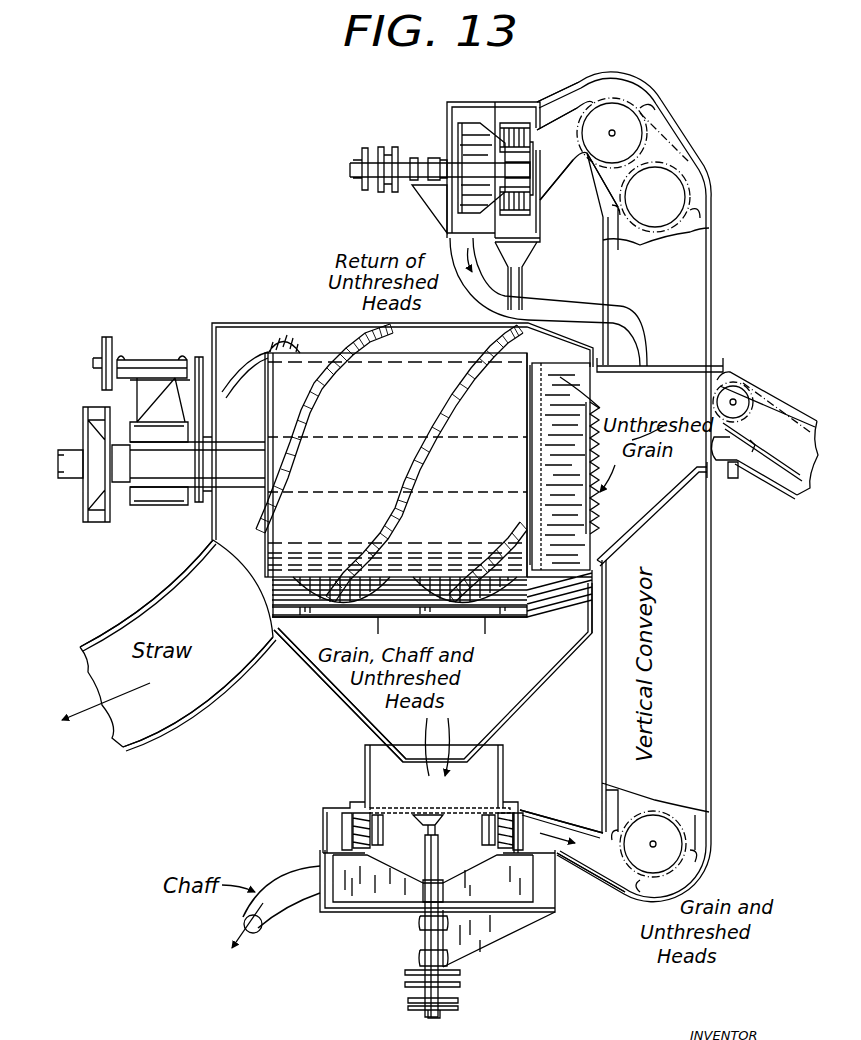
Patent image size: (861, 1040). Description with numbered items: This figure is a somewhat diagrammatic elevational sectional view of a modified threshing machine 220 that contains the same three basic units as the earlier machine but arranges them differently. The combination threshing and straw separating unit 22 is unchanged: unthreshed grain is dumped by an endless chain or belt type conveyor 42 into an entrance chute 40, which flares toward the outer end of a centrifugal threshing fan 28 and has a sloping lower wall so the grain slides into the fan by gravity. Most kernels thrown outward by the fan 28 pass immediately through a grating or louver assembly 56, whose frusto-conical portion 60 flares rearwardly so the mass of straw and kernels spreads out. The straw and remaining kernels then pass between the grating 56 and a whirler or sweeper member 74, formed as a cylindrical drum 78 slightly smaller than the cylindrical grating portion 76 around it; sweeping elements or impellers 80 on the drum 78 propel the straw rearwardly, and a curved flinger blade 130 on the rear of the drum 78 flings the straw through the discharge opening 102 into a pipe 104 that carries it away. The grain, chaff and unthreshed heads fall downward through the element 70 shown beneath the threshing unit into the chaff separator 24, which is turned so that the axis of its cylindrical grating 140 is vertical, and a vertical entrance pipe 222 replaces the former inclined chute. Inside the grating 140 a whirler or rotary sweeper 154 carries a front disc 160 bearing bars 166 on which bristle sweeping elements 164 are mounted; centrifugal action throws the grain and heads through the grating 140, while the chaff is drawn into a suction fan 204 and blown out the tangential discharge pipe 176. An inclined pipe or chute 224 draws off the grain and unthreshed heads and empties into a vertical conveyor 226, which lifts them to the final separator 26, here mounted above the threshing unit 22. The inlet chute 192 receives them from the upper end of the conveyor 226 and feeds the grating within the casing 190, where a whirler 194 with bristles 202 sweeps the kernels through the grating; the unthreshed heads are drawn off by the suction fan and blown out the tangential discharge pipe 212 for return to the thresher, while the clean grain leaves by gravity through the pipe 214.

The modified threshing machine 220 is at (168, 184).
The combination threshing and straw separating unit 22 is at (213, 318).
The chaff separator 24 is at (332, 920).
The final separator 26 is at (449, 108).
The centrifugal threshing fan 28 is at (606, 563).
The entrance chute 40 is at (680, 495).
The endless chain or belt type conveyor 42 is at (778, 405).
The grating or louver assembly 56 is at (523, 625).
The frusto-conical portion of the grating 60 is at (571, 613).
The hopper 70 is at (350, 713).
The whirler or sweeper member 74 is at (322, 335).
The cylindrical portion of the grating 76 is at (300, 645).
The cylindrical drum 78 is at (272, 403).
The sweeping elements or impellers 80 is at (428, 476).
The discharge opening 102 is at (235, 585).
The straw pipe 104 is at (184, 724).
The curved flinger blade 130 is at (243, 360).
The cylindrical grating 140 is at (337, 829).
The whirler or rotary sweeper 154 is at (503, 803).
The front plate or disc 160 is at (362, 816).
The sweeping elements 164 is at (353, 834).
The bars 166 is at (382, 834).
The tangential discharge pipe 176 is at (243, 914).
The casing 190 is at (491, 104).
The inlet pipe or chute 192 is at (560, 198).
The whirler 194 is at (546, 155).
The bristles 202 is at (452, 127).
The suction fan 204 is at (465, 200).
The tangential discharge pipe 212 is at (583, 270).
The grain pipe 214 is at (507, 305).
The vertical entrance pipe 222 is at (363, 766).
The inclined pipe or chute 224 is at (593, 876).
The vertical conveyor 226 is at (710, 740).